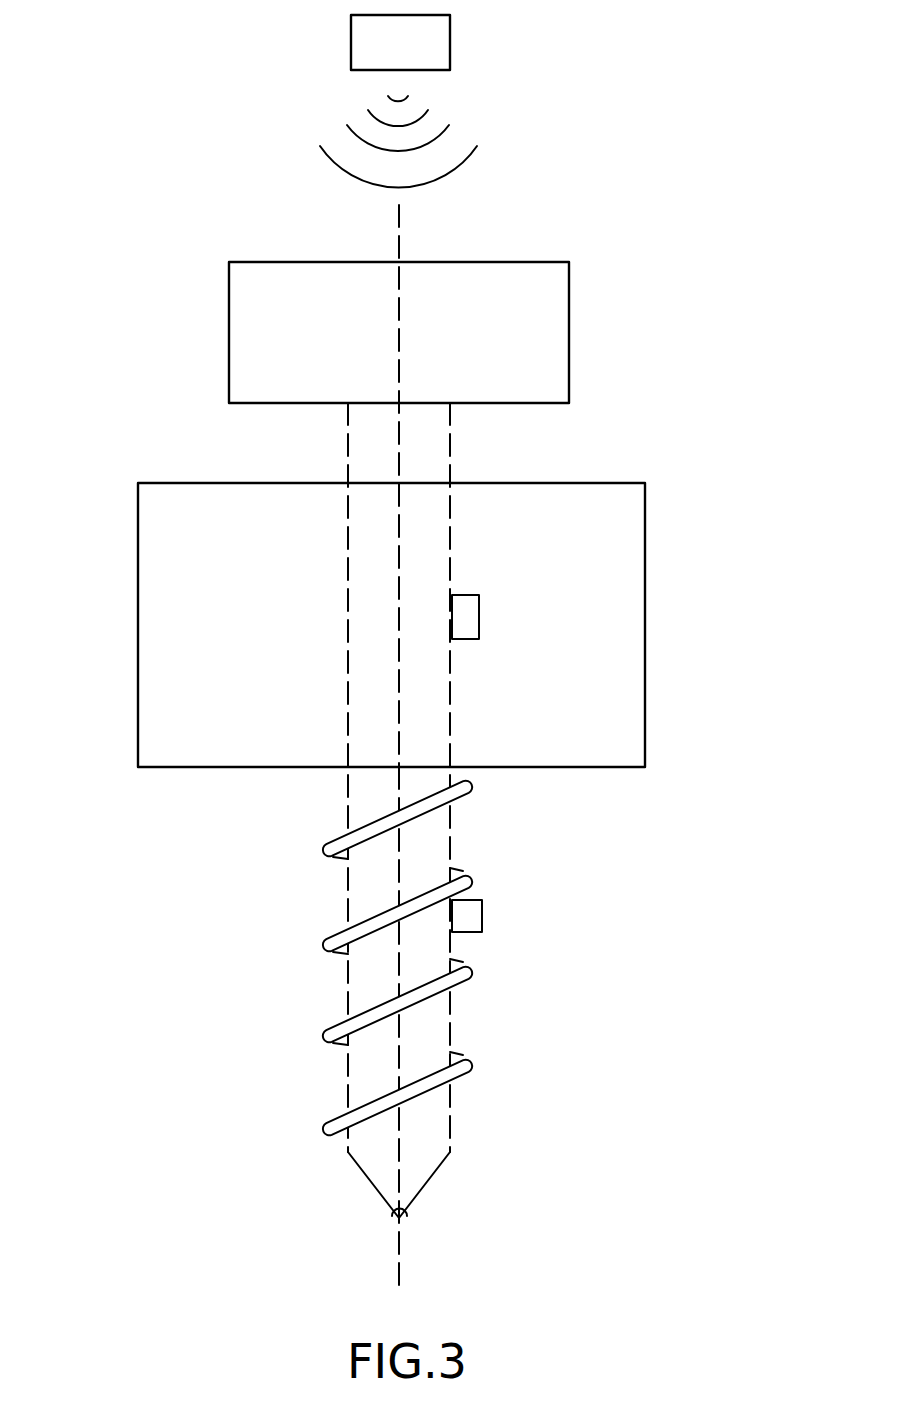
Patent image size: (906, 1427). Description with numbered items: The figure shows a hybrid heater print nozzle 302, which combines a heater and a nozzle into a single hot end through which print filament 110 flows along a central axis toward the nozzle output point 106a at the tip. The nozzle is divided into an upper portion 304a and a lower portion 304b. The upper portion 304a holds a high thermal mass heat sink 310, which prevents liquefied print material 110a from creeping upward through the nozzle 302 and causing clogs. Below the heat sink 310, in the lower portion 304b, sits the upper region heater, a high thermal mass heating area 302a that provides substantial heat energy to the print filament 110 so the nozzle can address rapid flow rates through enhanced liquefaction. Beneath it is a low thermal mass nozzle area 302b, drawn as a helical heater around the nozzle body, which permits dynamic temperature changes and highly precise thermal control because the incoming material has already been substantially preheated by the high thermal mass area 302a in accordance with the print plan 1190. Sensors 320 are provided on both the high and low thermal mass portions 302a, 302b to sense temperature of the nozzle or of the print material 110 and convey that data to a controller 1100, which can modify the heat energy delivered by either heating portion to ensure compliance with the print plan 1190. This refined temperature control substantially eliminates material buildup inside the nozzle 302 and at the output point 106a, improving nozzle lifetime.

The hybrid heater print nozzle 302 is at (762, 35).
The high thermal mass heating area 302a is at (135, 480).
The low thermal mass nozzle area 302b is at (135, 782).
The upper portion 304a is at (512, 333).
The lower portion 304b is at (692, 478).
The heat sink 310 is at (454, 322).
The sensor 320 is at (479, 615).
The print filament 110 is at (399, 230).
The liquefied print material 110a is at (399, 540).
The nozzle output point 106a is at (398, 1215).
The controller 1100 is at (467, 42).
The print plan 1190 is at (427, 59).